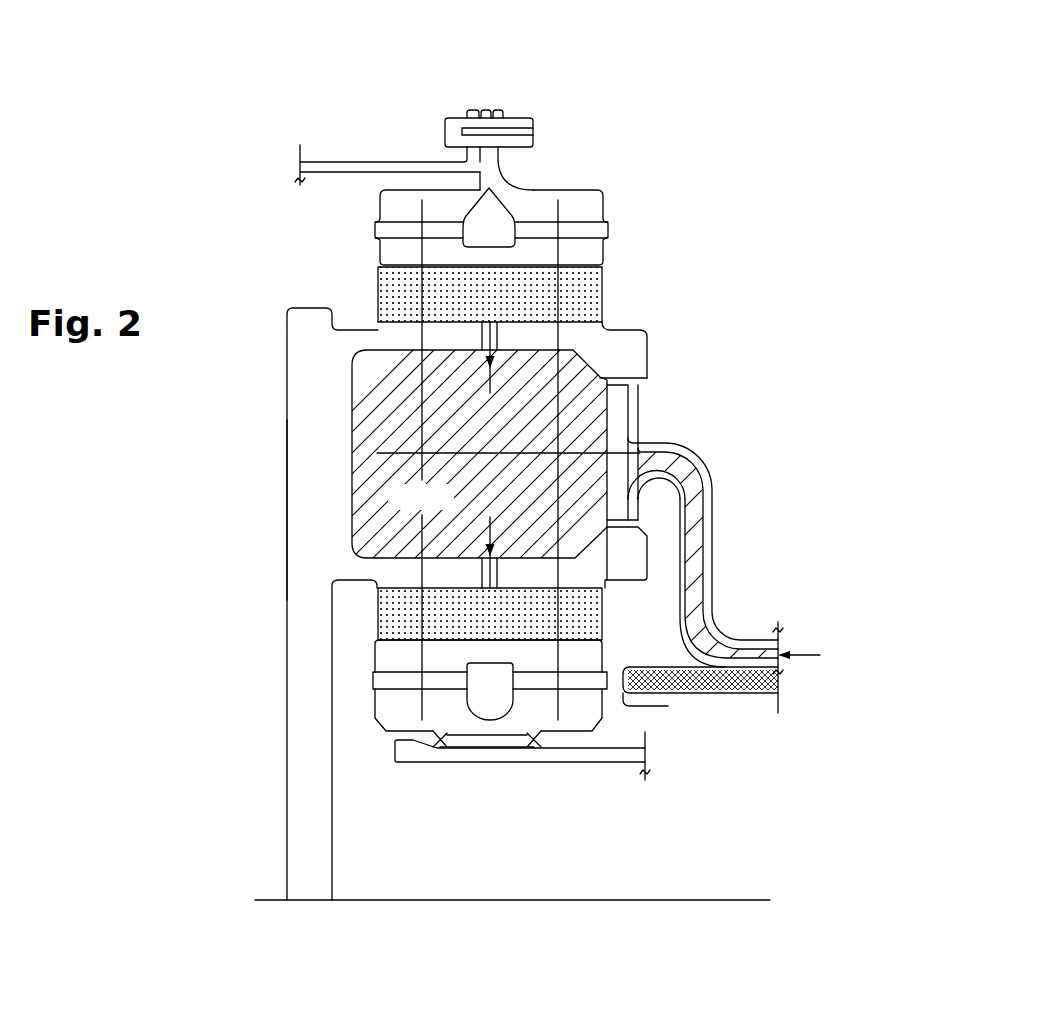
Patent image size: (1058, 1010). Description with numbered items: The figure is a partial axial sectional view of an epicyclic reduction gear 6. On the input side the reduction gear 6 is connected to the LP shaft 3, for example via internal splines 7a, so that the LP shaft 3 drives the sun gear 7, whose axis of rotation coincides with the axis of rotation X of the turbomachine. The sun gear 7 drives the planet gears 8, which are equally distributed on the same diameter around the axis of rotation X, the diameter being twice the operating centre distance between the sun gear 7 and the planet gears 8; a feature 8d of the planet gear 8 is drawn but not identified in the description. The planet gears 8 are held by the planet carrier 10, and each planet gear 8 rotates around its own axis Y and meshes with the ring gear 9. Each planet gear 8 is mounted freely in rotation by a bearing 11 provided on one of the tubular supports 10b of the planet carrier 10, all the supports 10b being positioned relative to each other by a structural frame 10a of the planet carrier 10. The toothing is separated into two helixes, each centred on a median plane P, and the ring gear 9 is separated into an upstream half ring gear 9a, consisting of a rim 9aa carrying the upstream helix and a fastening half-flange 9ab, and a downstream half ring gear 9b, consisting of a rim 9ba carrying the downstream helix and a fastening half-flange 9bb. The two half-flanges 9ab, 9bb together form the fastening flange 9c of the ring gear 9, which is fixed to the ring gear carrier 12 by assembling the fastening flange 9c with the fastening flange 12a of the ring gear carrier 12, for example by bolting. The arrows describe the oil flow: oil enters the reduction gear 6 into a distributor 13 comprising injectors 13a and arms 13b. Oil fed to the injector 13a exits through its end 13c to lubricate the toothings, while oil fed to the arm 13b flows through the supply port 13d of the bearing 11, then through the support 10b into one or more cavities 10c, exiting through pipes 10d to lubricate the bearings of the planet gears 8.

The LP shaft 3 is at (608, 753).
The epicyclic reduction gear 6 is at (731, 271).
The sun gear 7 is at (383, 705).
The internal splines 7a is at (470, 742).
The planet gear 8 is at (383, 655).
The flange of lower elastic member 8d is at (383, 679).
The ring gear 9 is at (605, 190).
The upstream half ring gear 9a is at (375, 210).
The rim 9aa is at (400, 200).
The fastening half-flange 9ab is at (480, 110).
The downstream half ring gear 9b is at (608, 210).
The rim 9ba is at (548, 200).
The fastening half-flange 9bb is at (495, 110).
The fastening flange 9c is at (558, 46).
The planet carrier 10 is at (650, 326).
The structural frame 10a is at (310, 407).
The tubular support 10b is at (633, 557).
The cavity 10c is at (466, 465).
The pipes 10d is at (497, 333).
The bearing 11 is at (600, 283).
The ring gear carrier 12 is at (340, 160).
The fastening flange 12a is at (467, 108).
The distributor 13 is at (780, 604).
The injector 13a is at (723, 692).
The arm 13b is at (712, 505).
The end 13c is at (668, 706).
The supply port 13d is at (640, 400).
The median plane P is at (385, 726).
The axis of rotation X is at (735, 900).
The axis Y is at (640, 444).